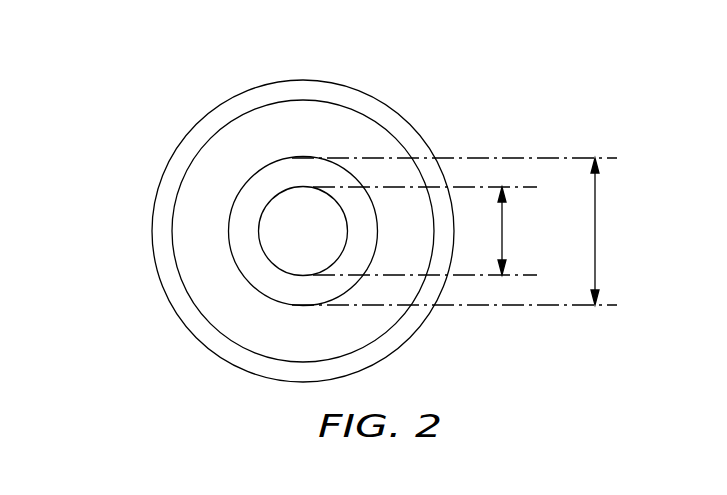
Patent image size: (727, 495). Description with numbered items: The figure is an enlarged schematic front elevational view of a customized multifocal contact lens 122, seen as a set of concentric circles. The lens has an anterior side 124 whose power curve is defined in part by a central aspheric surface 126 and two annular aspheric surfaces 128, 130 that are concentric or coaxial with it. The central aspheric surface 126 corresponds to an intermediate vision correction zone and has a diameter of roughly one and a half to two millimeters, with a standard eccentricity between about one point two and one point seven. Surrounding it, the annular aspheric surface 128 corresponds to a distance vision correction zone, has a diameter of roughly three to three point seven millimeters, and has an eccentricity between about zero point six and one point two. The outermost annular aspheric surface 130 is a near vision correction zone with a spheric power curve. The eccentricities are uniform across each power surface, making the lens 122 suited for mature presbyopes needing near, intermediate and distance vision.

The customized multifocal contact lens 122 is at (158, 333).
The anterior side 124 is at (192, 248).
The central aspheric surface 126 is at (284, 233).
The annular aspheric surface 128 is at (242, 212).
The annular aspheric surface (outer area) 130 is at (283, 122).